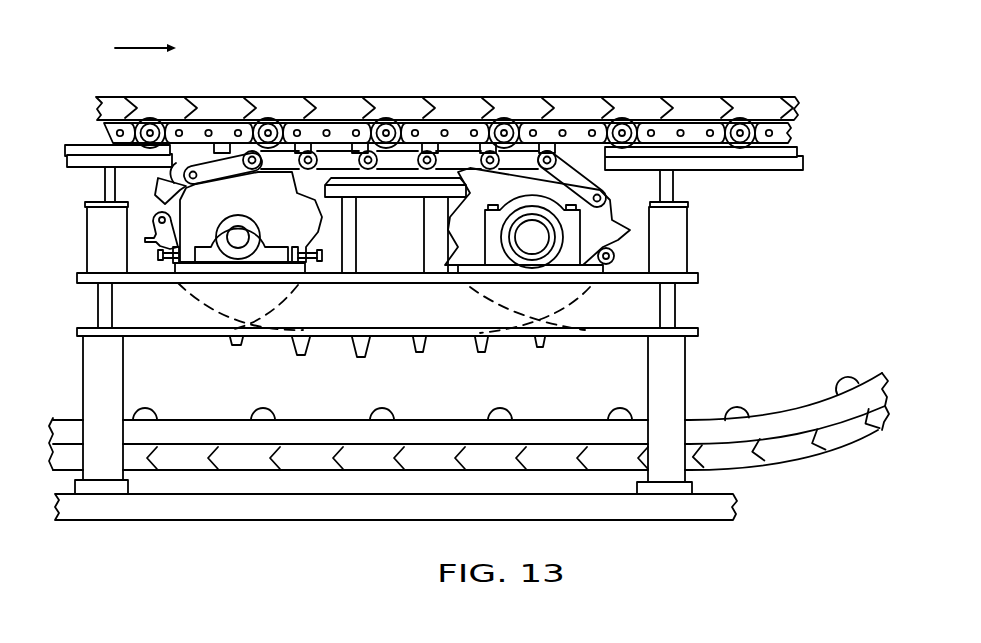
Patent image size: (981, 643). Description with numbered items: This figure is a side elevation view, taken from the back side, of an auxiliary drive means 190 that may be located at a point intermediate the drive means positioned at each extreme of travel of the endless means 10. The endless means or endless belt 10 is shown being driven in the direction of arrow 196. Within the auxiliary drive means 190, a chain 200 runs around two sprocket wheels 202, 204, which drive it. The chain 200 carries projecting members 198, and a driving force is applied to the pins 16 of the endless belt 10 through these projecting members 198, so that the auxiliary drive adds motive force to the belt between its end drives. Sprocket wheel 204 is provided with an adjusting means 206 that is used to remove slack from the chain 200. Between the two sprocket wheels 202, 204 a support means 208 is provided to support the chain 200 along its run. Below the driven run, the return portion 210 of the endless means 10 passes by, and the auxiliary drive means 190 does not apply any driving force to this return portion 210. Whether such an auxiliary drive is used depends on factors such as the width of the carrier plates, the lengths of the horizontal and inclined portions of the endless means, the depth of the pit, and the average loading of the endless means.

The endless means 10 is at (616, 80).
The pins 16 is at (237, 129).
The auxiliary drive means 190 is at (748, 236).
The arrow 196 is at (146, 44).
The projecting members 198 is at (592, 186).
The chain 200 is at (324, 157).
The sprocket wheel 202 is at (453, 251).
The sprocket wheel 204 is at (326, 240).
The adjusting means 206 is at (168, 256).
The support means 208 is at (404, 177).
The return portion 210 is at (219, 419).